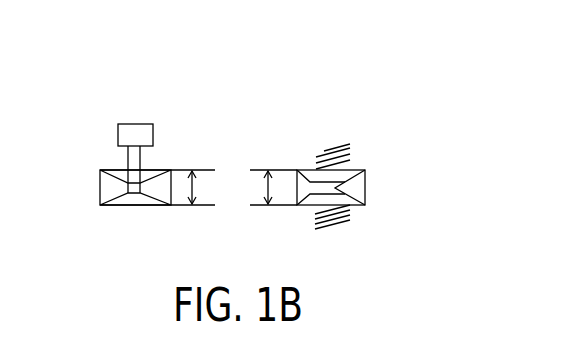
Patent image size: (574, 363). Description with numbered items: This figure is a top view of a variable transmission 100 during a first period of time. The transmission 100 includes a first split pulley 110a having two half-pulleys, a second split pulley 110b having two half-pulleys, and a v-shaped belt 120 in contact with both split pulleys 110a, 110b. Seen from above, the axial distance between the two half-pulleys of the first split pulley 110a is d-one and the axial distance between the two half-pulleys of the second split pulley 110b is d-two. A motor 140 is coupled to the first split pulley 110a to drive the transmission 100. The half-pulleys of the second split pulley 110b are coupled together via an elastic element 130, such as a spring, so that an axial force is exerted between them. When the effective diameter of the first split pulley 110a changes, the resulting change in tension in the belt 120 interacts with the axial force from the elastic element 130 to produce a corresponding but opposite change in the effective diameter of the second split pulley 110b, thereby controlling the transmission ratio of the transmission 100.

The variable transmission 100 is at (321, 89).
The first split pulley 110a is at (138, 198).
The second split pulley 110b is at (325, 202).
The v-shaped belt 120 is at (104, 188).
The elastic element 130 is at (362, 219).
The motor 140 is at (142, 137).